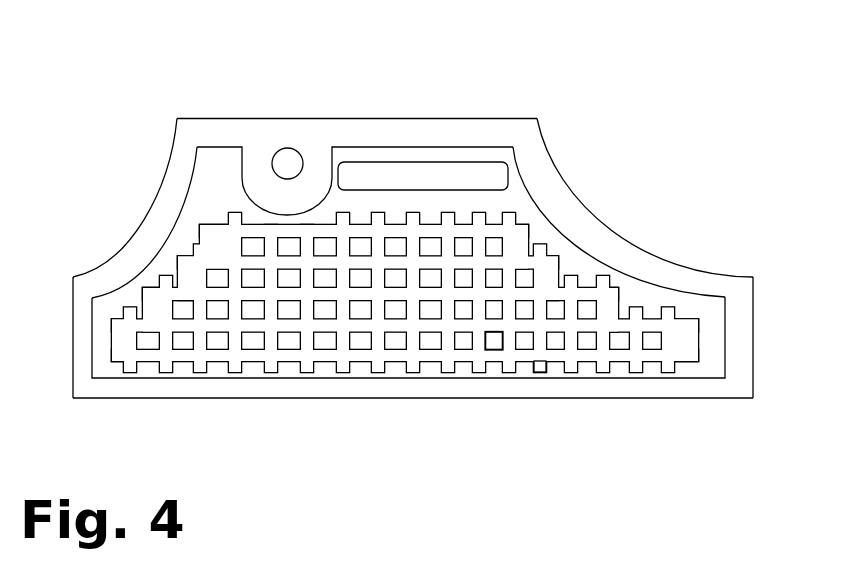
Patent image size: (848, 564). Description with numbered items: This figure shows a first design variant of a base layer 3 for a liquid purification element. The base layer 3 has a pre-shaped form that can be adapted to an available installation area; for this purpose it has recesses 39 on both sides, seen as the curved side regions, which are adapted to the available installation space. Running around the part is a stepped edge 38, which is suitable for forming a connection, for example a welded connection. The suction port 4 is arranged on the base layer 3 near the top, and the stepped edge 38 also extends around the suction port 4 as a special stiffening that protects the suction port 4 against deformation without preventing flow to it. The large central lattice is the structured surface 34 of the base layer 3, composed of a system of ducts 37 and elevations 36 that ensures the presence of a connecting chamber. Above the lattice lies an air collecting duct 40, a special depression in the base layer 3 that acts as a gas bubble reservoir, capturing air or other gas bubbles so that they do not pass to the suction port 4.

The base layer 3 is at (572, 86).
The suction port 4 is at (285, 160).
The structured surface 34 is at (690, 367).
The elevations 36 is at (490, 345).
The ducts 37 is at (542, 352).
The stepped edge 38 is at (740, 330).
The recesses 39 is at (143, 245).
The air collecting duct 40 is at (450, 175).